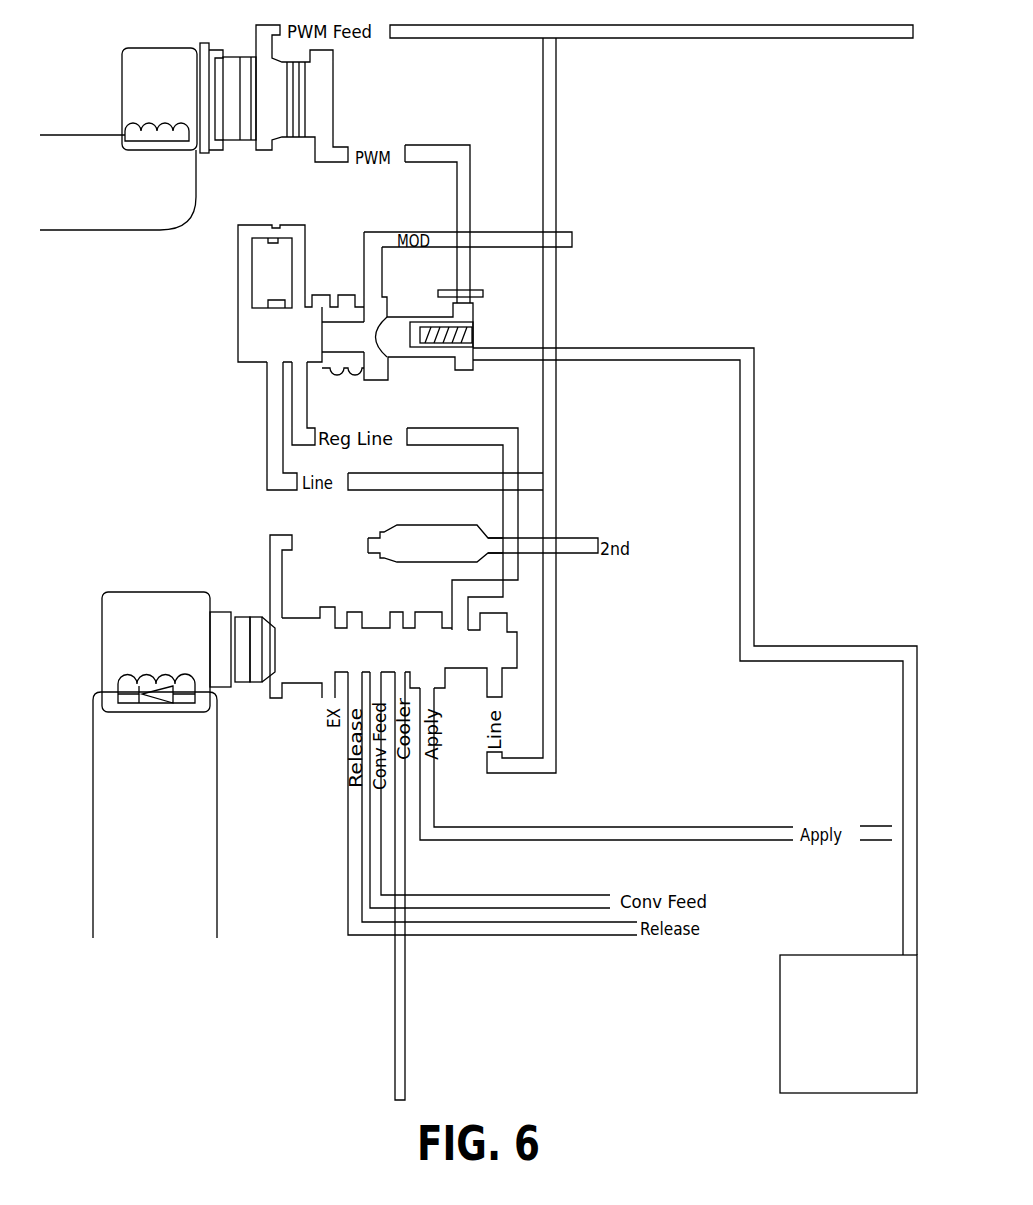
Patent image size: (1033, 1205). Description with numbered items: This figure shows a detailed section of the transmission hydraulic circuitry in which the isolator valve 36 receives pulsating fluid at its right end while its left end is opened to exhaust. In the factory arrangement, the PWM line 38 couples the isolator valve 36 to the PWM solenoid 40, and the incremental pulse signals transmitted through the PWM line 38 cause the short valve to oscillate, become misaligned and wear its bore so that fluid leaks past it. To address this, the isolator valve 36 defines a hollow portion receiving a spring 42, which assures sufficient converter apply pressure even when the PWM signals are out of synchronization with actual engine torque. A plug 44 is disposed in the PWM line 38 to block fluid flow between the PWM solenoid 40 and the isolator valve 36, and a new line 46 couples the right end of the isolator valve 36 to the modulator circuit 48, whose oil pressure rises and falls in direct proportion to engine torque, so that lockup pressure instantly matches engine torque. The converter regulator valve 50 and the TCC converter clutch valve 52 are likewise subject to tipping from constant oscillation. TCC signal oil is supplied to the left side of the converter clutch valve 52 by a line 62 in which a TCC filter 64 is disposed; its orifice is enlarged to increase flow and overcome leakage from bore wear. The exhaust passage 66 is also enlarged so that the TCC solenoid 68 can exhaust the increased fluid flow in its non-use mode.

The isolator valve 36 is at (432, 358).
The PWM line 38 is at (471, 177).
The PWM solenoid 40 is at (122, 94).
The spring 42 is at (432, 318).
The plug 44 is at (480, 289).
The line 46 is at (607, 348).
The modulator circuit 48 is at (780, 1040).
The converter regulator valve 50 is at (238, 345).
The TCC converter clutch valve 52 is at (312, 614).
The line 62 is at (272, 536).
The TCC filter 64 is at (408, 524).
The exhaust passage 66 is at (264, 700).
The TCC solenoid 68 is at (102, 647).